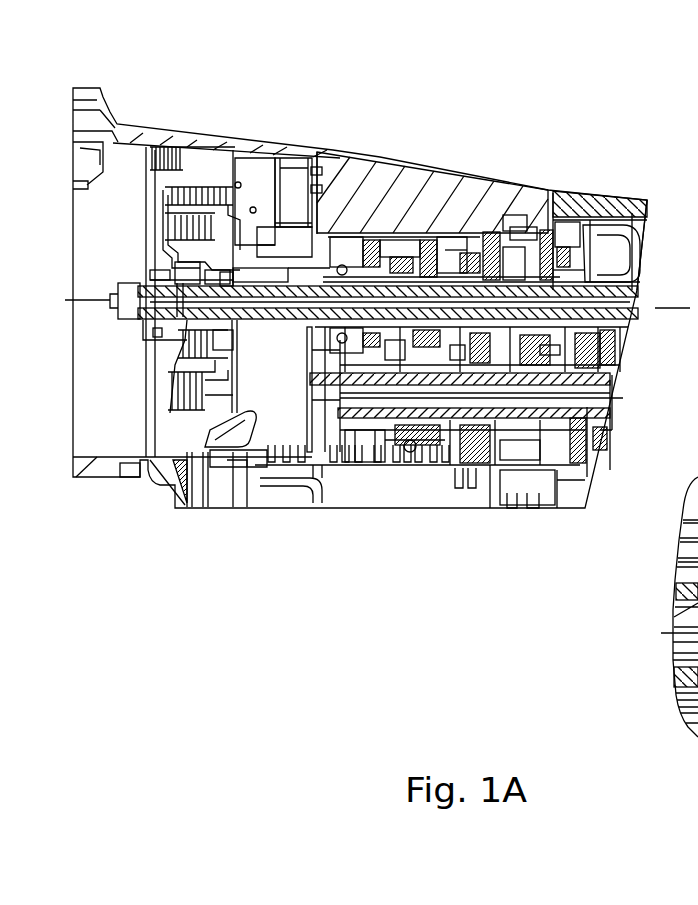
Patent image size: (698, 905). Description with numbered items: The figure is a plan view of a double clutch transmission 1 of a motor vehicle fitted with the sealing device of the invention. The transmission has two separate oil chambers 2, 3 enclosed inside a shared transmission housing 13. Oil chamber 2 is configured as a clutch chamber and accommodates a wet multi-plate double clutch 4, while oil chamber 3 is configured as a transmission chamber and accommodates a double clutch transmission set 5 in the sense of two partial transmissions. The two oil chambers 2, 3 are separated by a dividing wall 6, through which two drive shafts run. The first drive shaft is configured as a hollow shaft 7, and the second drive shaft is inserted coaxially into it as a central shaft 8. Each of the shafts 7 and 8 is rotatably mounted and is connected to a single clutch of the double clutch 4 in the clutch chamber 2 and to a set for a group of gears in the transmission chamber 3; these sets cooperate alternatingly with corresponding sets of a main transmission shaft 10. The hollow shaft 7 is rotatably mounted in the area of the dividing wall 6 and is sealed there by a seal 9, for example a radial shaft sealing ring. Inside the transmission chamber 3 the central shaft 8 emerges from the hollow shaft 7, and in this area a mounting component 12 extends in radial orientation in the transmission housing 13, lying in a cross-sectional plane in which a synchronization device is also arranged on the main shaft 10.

The double clutch transmission 1 is at (288, 652).
The oil chamber 2 is at (247, 170).
The oil chamber 3 is at (601, 240).
The double clutch 4 is at (195, 405).
The double clutch transmission set 5 is at (408, 474).
The dividing wall 6 is at (382, 165).
The hollow shaft 7 is at (518, 270).
The central shaft 8 is at (652, 258).
The seal 9 is at (343, 337).
The main transmission shaft 10 is at (363, 443).
The mounting component 12 is at (560, 272).
The transmission housing 13 is at (453, 190).